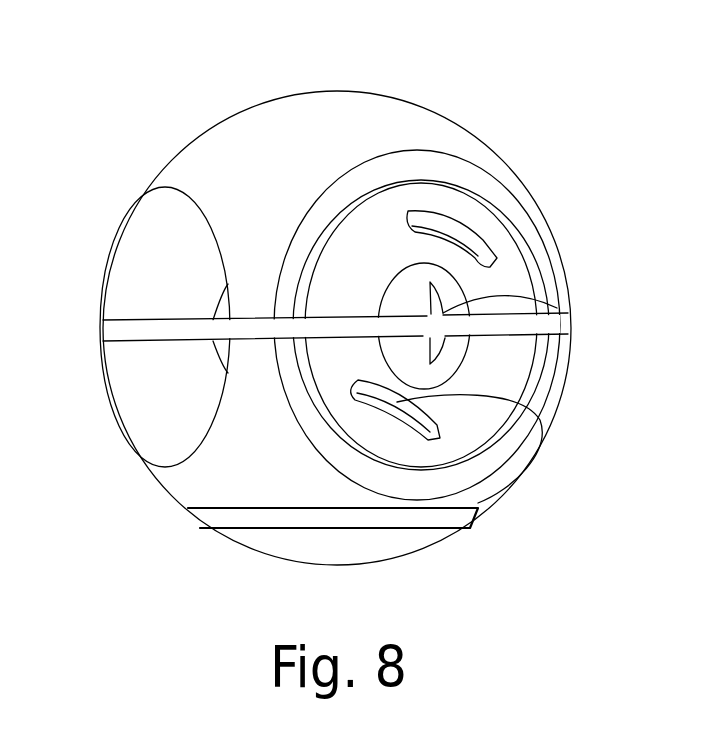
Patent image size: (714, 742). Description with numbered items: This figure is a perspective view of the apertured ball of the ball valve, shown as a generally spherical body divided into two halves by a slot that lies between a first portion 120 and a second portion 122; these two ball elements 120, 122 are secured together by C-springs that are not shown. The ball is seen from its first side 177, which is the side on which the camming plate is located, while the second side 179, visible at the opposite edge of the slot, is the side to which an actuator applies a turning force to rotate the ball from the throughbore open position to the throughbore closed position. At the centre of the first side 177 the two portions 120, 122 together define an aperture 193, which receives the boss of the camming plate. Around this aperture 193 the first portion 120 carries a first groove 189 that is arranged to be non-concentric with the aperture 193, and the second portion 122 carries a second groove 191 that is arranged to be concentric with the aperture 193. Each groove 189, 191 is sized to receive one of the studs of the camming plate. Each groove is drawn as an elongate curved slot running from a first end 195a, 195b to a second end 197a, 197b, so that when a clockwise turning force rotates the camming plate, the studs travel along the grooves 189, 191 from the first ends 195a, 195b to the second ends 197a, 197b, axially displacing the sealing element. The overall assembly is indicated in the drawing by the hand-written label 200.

The assembly 200 is at (160, 282).
The second portion 122 is at (397, 100).
The first portion 120 is at (190, 488).
The second side 179 is at (103, 323).
The first side 177 is at (472, 175).
The second groove 191 is at (470, 237).
The first groove 189 is at (530, 398).
The aperture 193 is at (558, 313).
The first end 195a is at (410, 218).
The first end 195b is at (430, 430).
The second end 197a is at (478, 266).
The second end 197b is at (350, 428).